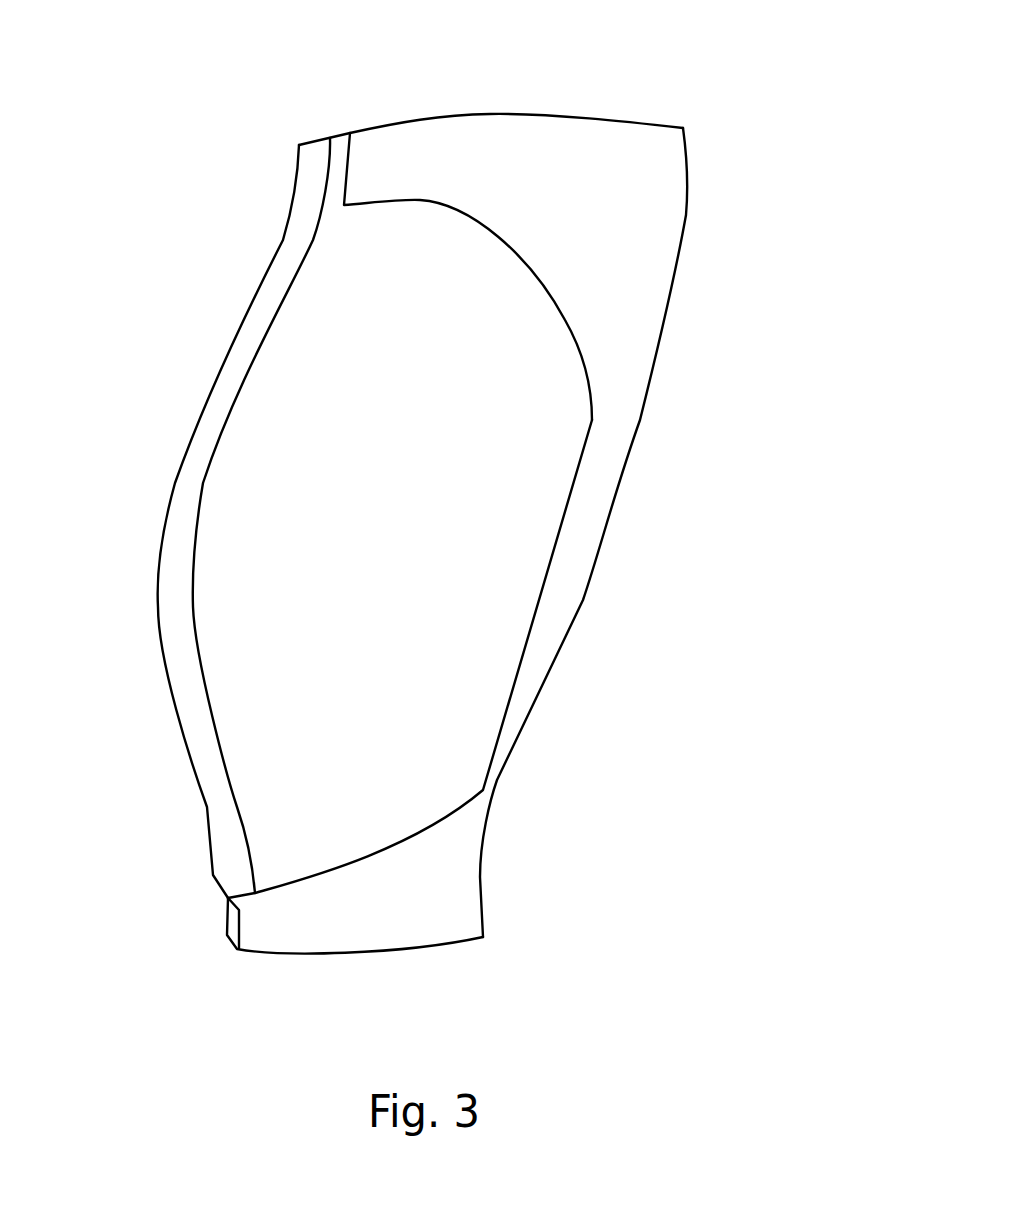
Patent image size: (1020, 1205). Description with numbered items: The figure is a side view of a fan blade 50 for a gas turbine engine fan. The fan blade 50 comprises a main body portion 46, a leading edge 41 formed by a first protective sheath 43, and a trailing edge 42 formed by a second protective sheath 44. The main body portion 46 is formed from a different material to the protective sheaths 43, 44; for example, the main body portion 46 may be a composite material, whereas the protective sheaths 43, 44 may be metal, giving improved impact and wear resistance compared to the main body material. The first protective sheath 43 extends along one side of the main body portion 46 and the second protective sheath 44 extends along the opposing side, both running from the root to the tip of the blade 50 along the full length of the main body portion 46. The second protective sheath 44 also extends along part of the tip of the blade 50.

The leading edge 41 is at (175, 485).
The trailing edge 42 is at (687, 213).
The first protective sheath 43 is at (177, 598).
The second protective sheath 44 is at (633, 242).
The main body portion 46 is at (437, 547).
The fan blade 50 is at (745, 480).